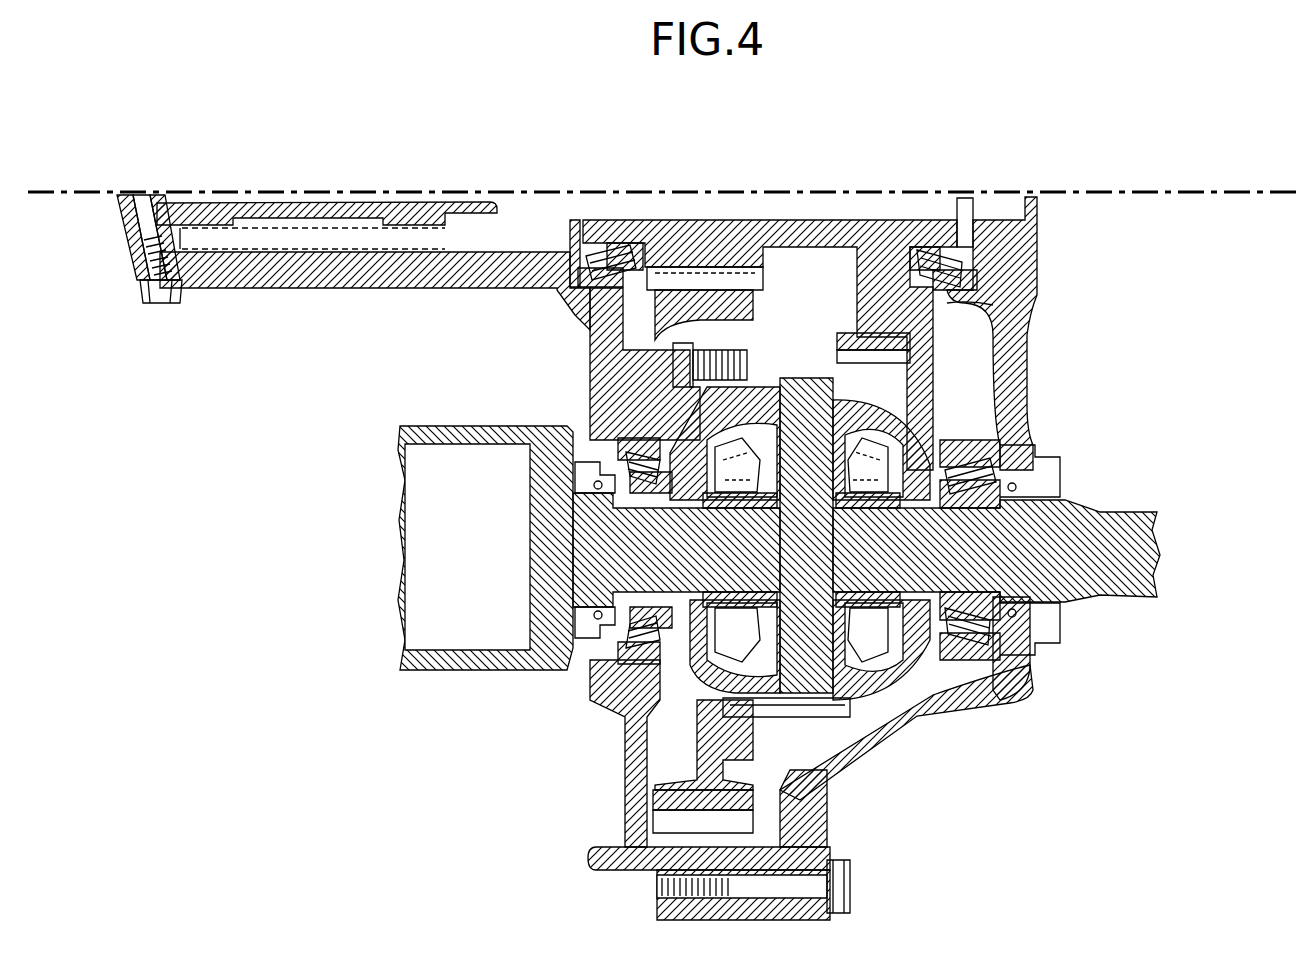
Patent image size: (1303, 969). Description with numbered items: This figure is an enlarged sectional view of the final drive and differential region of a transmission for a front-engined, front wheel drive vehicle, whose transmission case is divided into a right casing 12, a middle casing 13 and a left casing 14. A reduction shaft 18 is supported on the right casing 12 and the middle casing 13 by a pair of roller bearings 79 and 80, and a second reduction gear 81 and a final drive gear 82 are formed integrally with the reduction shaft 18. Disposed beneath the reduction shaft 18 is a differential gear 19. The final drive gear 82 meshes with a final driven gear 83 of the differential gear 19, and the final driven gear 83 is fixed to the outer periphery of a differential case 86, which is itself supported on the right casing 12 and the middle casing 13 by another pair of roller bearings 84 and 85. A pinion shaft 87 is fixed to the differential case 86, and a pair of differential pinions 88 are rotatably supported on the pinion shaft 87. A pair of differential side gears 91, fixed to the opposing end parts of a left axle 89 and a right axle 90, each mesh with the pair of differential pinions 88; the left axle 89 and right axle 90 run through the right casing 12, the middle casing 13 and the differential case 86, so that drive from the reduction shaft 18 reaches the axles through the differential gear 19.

The right casing 12 is at (1020, 430).
The middle casing 13 is at (417, 282).
The left casing 14 is at (243, 270).
The reduction shaft 18 is at (737, 235).
The differential gear 19 is at (913, 421).
The roller bearing 79 is at (940, 262).
The roller bearing 80 is at (607, 262).
The second reduction gear 81 is at (843, 353).
The final drive gear 82 is at (768, 282).
The final driven gear 83 is at (690, 302).
The roller bearing 84 is at (1007, 680).
The roller bearing 85 is at (647, 652).
The differential case 86 is at (933, 700).
The pinion shaft 87 is at (812, 387).
The differential pinion 88 is at (835, 420).
The left axle 89 is at (712, 568).
The right axle 90 is at (983, 568).
The differential side gear 91 is at (743, 508).